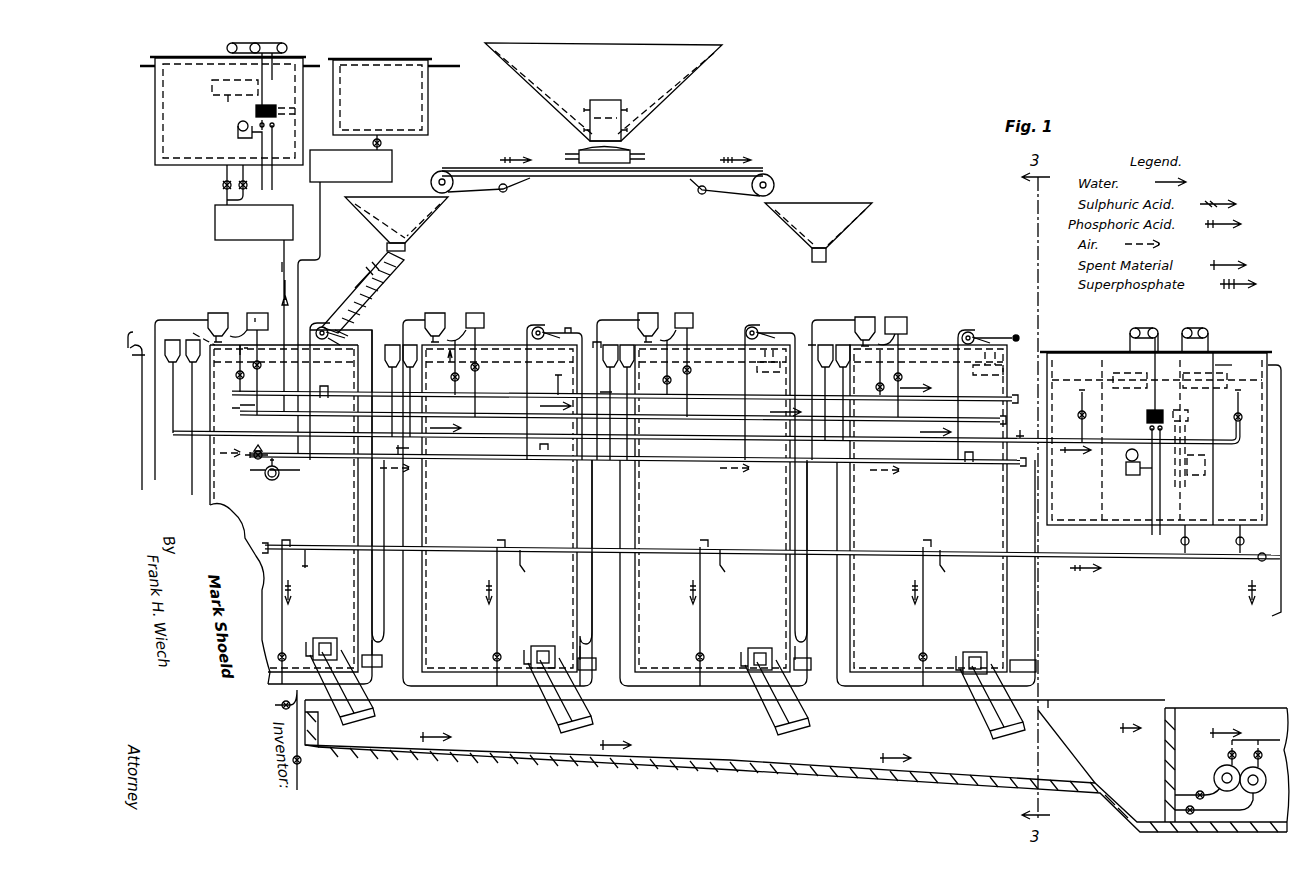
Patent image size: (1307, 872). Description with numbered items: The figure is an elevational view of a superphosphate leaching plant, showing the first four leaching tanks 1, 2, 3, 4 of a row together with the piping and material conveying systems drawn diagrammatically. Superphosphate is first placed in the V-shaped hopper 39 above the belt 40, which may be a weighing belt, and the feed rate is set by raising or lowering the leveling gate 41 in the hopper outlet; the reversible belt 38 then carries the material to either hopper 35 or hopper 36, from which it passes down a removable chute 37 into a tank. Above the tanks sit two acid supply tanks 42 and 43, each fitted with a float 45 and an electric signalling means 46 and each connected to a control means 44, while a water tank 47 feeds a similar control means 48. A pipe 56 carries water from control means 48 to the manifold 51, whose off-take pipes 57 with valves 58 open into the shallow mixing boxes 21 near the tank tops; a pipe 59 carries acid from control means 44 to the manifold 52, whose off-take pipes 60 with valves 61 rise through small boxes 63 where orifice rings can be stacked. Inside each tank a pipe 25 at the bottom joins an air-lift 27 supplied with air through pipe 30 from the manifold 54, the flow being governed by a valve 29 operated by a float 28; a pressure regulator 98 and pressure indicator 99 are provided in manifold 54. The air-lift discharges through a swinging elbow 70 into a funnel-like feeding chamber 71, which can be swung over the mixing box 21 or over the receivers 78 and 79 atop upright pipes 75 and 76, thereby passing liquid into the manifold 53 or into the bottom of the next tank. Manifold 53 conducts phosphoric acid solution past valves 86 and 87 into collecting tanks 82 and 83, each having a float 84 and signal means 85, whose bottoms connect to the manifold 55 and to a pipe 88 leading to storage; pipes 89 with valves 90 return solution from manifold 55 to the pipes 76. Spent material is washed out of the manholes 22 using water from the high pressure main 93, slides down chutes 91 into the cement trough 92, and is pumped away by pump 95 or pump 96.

The leaching tank 1 is at (310, 330).
The leaching tank 2 is at (506, 340).
The leaching tank 3 is at (718, 340).
The leaching tank 4 is at (934, 345).
The shallow box 21 is at (486, 356).
The manhole 22 is at (328, 638).
The pipe 25 is at (374, 660).
The air-lift 27 is at (380, 628).
The float 28 is at (778, 350).
The valve 29 is at (324, 327).
The air supply pipe 30 is at (140, 345).
The hopper 35 is at (428, 208).
The hopper 36 is at (850, 228).
The removable chute 37 is at (405, 269).
The reversible belt 38 is at (685, 173).
The V-shaped hopper 39 is at (672, 90).
The belt 40 is at (622, 152).
The leveling gate 41 is at (590, 118).
The acid supply tank 42 is at (298, 117).
The acid supply tank 43 is at (157, 96).
The control means 44 is at (215, 218).
The float 45 is at (226, 97).
The electric signalling means 46 is at (237, 136).
The water tank 47 is at (425, 105).
The control means 48 is at (380, 165).
The manifold 51 is at (610, 385).
The manifold 52 is at (305, 400).
The manifold 53 is at (460, 452).
The manifold 54 is at (465, 470).
The manifold 55 is at (345, 546).
The pipe 56 is at (320, 238).
The off-take pipe 57 is at (237, 372).
The valve 58 is at (452, 378).
The pipe 59 is at (283, 252).
The off-take pipe 60 is at (258, 348).
The valve 61 is at (920, 380).
The small box 63 is at (255, 313).
The swinging elbow 70 is at (160, 318).
The feeding chamber 71 is at (212, 313).
The upright pipe 75 is at (171, 410).
The upright pipe 76 is at (190, 462).
The funnel-shaped receiver 78 is at (165, 355).
The funnel-shaped receiver 79 is at (186, 358).
The collecting tank 82 is at (1075, 356).
The collecting tank 83 is at (1252, 356).
The float 84 is at (1135, 388).
The signal means 85 is at (1130, 475).
The valve 86 is at (1078, 416).
The valve 87 is at (1242, 414).
The pipe 88 is at (1278, 608).
The pipe 89 is at (286, 612).
The valve 90 is at (493, 657).
The chute 91 is at (378, 714).
The cement trough 92 is at (825, 778).
The high pressure water main 93 is at (302, 776).
The pump 95 is at (1218, 768).
The pump 96 is at (1258, 792).
The pressure regulator 98 is at (256, 462).
The pressure indicator 99 is at (280, 477).